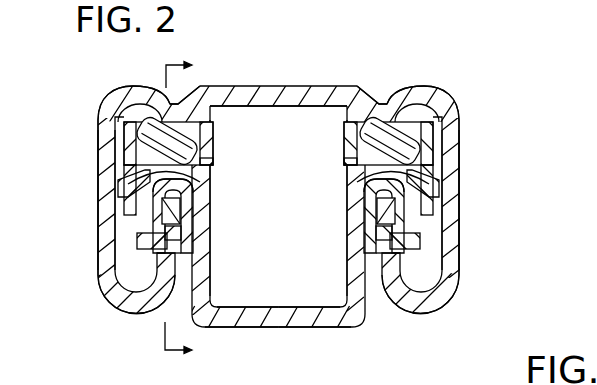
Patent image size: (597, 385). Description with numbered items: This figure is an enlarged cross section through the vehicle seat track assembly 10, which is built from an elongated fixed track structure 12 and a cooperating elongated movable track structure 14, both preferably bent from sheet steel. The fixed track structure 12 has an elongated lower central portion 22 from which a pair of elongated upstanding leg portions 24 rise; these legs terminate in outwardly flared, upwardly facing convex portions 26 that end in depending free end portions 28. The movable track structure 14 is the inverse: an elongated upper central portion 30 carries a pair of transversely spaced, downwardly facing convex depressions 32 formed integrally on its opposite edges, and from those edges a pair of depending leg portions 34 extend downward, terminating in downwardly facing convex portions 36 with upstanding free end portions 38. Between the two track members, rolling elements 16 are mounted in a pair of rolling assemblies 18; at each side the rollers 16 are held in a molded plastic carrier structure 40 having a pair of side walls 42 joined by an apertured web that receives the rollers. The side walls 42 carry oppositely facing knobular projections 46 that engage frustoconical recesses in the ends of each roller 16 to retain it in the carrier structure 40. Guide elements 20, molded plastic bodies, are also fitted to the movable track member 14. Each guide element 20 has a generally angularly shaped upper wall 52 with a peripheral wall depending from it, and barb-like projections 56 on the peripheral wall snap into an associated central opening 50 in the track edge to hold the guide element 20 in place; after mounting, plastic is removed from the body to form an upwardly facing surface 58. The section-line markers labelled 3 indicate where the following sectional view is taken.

The section line 3- 3 is at (169, 210).
The vehicle seat track assembly 10 is at (457, 68).
The fixed track structure 12 is at (290, 333).
The movable track structure 14 is at (470, 194).
The rolling elements 16 is at (142, 124).
The rolling assemblies 18 is at (108, 143).
The guide elements 20 is at (126, 241).
The lower central portion 22 is at (307, 320).
The upstanding leg portions 24 is at (212, 283).
The outwardly flared upwardly facing convex portions 26 is at (213, 170).
The depending free end portions 28 is at (152, 204).
The upper central portion 30 is at (297, 92).
The downwardly facing convex depressions 32 is at (153, 98).
The depending leg portions 34 is at (107, 172).
The downwardly facing convex portions 36 is at (133, 303).
The upstanding free end portions 38 is at (180, 205).
The carrier structure 40 is at (116, 128).
The side walls 42 is at (213, 142).
The knobular projections 46 is at (175, 108).
The opening 50 is at (185, 240).
The upper wall 52 is at (205, 178).
The barb-like projections 56 is at (183, 230).
The upwardly facing surface 58 is at (211, 160).